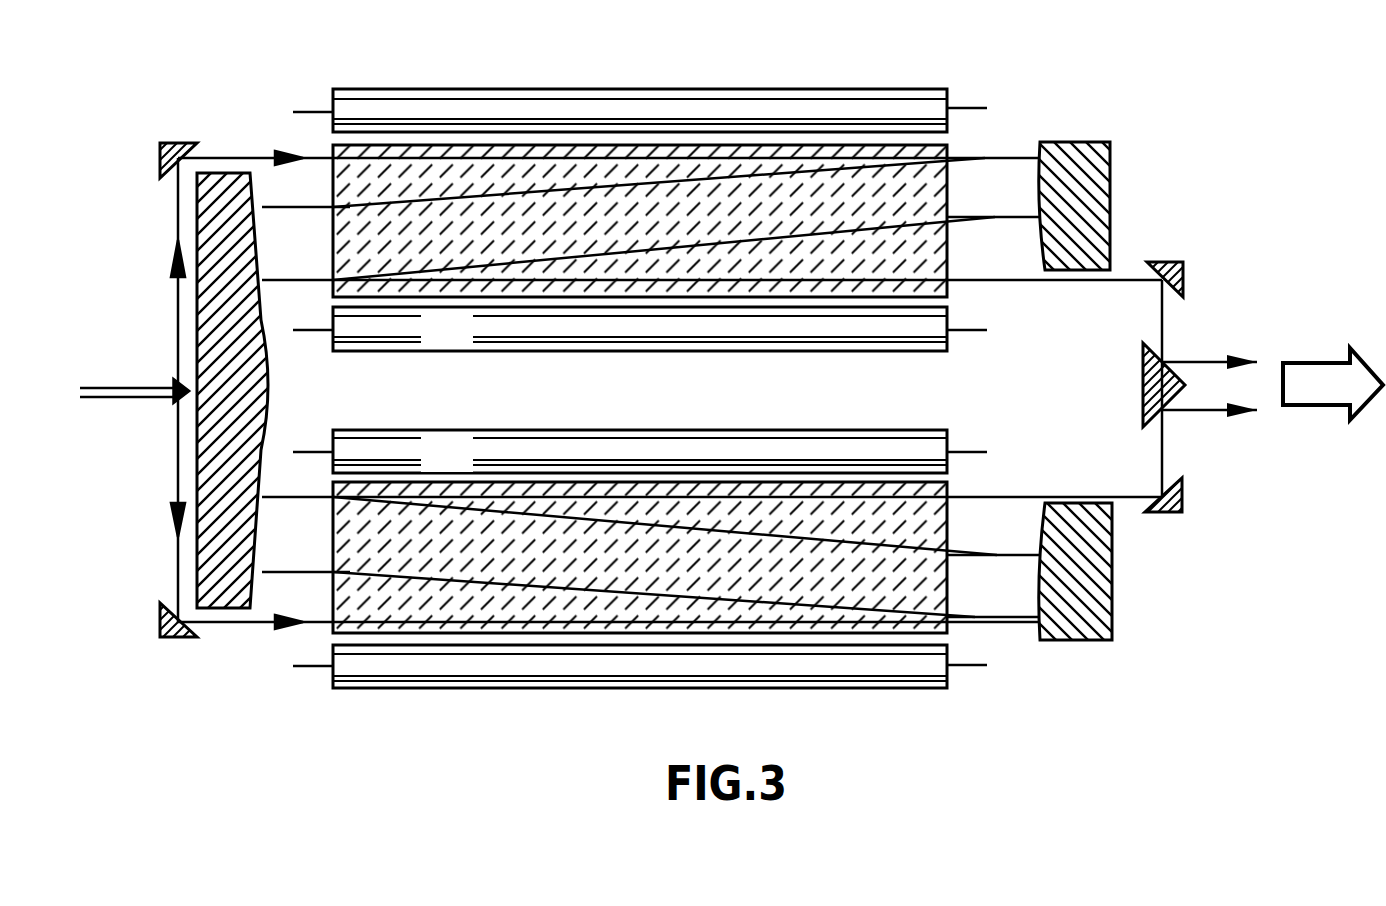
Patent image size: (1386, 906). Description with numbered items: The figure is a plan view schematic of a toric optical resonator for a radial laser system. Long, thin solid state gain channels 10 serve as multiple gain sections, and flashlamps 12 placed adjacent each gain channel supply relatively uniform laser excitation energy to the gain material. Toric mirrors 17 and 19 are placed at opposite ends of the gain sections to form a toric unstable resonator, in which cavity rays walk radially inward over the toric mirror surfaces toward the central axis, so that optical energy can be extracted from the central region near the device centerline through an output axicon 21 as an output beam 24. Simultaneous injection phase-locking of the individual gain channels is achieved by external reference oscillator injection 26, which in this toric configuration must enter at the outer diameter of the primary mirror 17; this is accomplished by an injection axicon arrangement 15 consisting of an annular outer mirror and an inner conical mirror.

The gain channels 10 is at (872, 210).
The flashlamps 12 is at (563, 82).
The injection axicon arrangement 15 is at (165, 435).
The toric primary mirror 17 is at (237, 642).
The toric mirror 19 is at (1077, 647).
The output prism 21 is at (1190, 457).
The output beam 24 is at (1300, 357).
The external reference oscillator signal 26 is at (135, 368).